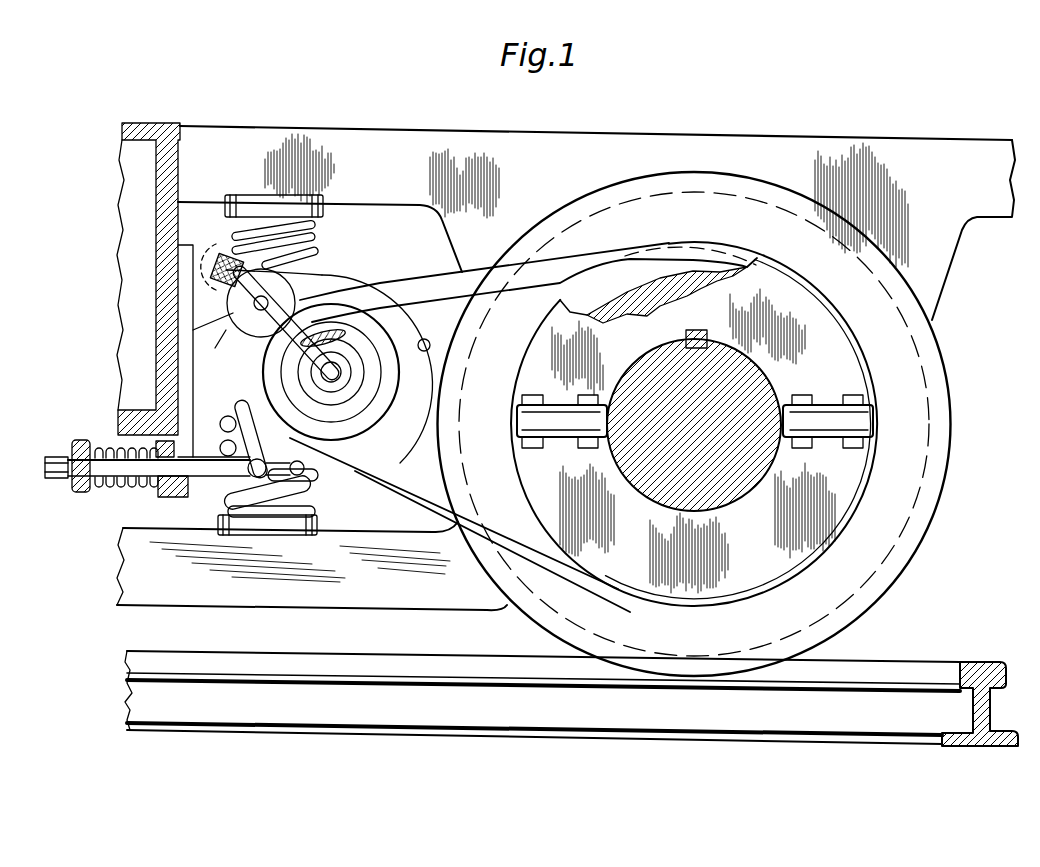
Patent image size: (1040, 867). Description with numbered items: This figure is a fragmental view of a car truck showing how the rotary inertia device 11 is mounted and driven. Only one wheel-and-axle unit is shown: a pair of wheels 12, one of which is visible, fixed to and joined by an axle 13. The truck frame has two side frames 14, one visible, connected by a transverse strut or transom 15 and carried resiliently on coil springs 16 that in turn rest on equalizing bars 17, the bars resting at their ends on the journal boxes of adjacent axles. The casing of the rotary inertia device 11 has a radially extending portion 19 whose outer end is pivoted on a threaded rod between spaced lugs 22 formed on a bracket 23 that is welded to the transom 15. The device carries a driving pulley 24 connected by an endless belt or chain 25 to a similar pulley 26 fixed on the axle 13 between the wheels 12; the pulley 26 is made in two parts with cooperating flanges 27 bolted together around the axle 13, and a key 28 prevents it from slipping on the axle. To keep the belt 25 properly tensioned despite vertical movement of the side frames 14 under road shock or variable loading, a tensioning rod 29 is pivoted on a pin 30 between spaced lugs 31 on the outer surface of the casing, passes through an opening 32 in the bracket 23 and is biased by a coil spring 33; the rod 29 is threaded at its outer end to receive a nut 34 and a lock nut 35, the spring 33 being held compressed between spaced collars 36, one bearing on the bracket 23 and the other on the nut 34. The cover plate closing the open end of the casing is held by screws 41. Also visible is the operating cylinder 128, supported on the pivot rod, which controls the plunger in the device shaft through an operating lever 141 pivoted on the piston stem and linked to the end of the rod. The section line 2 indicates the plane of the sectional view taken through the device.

The section line 2- 2 is at (213, 248).
The rotary inertia device 11 is at (372, 270).
The wheels 12 is at (873, 590).
The axle 13 is at (766, 386).
The side frames 14 is at (320, 137).
The transverse strut or transom 15 is at (157, 253).
The coil springs 16 is at (318, 227).
The equalizing bars 17 is at (372, 600).
The radially extending portion 19 is at (300, 268).
The spaced lugs 22 is at (195, 307).
The bracket 23 is at (178, 333).
The driving pulley 24 is at (371, 437).
The endless belt or chain 25 is at (472, 282).
The pulley 26 is at (533, 485).
The cooperating flanges 27 is at (563, 417).
The key 28 is at (698, 332).
The tensioning rod 29 is at (196, 466).
The pin 30 is at (232, 480).
The spaced lugs 31 is at (226, 436).
The opening 32 is at (178, 496).
The coil spring 33 is at (114, 487).
The nut 34 is at (68, 468).
The lock nut 35 is at (53, 455).
The spaced collars 36 is at (112, 449).
The screws 41 is at (297, 461).
The operating cylinder 128 is at (208, 352).
The operating lever 141 is at (298, 318).